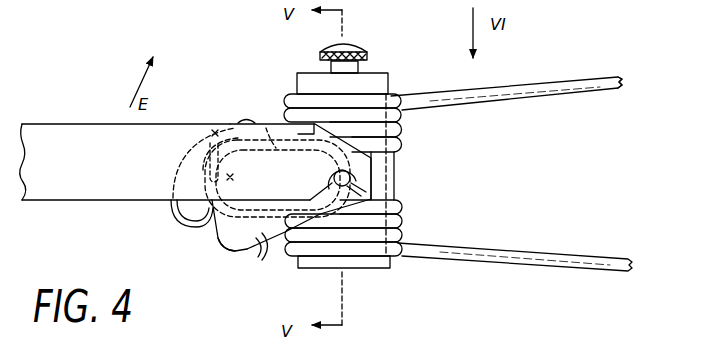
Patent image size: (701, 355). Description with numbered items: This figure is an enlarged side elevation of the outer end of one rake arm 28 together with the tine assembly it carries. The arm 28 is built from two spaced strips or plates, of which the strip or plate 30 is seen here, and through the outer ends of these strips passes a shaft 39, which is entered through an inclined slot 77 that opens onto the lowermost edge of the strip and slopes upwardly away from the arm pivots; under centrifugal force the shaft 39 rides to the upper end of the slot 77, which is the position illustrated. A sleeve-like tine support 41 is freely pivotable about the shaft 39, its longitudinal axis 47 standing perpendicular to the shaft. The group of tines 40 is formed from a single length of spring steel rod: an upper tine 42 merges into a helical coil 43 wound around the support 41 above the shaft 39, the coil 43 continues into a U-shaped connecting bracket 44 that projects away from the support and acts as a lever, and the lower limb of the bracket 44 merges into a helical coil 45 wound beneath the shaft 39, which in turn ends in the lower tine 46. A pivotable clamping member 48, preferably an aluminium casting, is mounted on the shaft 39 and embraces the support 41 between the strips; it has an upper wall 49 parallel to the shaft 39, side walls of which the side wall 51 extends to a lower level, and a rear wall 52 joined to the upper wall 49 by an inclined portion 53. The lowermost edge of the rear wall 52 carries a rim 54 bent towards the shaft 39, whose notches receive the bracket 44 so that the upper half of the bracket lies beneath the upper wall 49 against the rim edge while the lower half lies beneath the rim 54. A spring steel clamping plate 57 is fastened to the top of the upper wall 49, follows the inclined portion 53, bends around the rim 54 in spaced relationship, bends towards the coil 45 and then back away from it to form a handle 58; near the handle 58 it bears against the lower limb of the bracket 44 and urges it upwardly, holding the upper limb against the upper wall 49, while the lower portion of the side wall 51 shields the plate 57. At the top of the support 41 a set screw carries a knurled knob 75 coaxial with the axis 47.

The arm 28 is at (88, 206).
The strip or plate 30 is at (76, 124).
The shaft 39 is at (357, 180).
The group of tines 40 is at (590, 75).
The tine support 41 is at (390, 82).
The upper tine 42 is at (510, 103).
The helical coil 43 is at (358, 172).
The connecting bracket 44 is at (281, 150).
The helical coil 45 is at (402, 226).
The lower tine 46 is at (508, 252).
The longitudinal axis 47 is at (346, 291).
The pivotable clamping member 48 is at (217, 244).
The upper wall 49 is at (272, 132).
The side wall 51 is at (243, 250).
The rear wall 52 is at (196, 153).
The inclined portion 53 is at (213, 128).
The rim 54 is at (233, 179).
The spring steel clamping plate 57 is at (173, 208).
The handle 58 is at (257, 264).
The knurled knob 75 is at (320, 55).
The inclined slot 77 is at (346, 192).